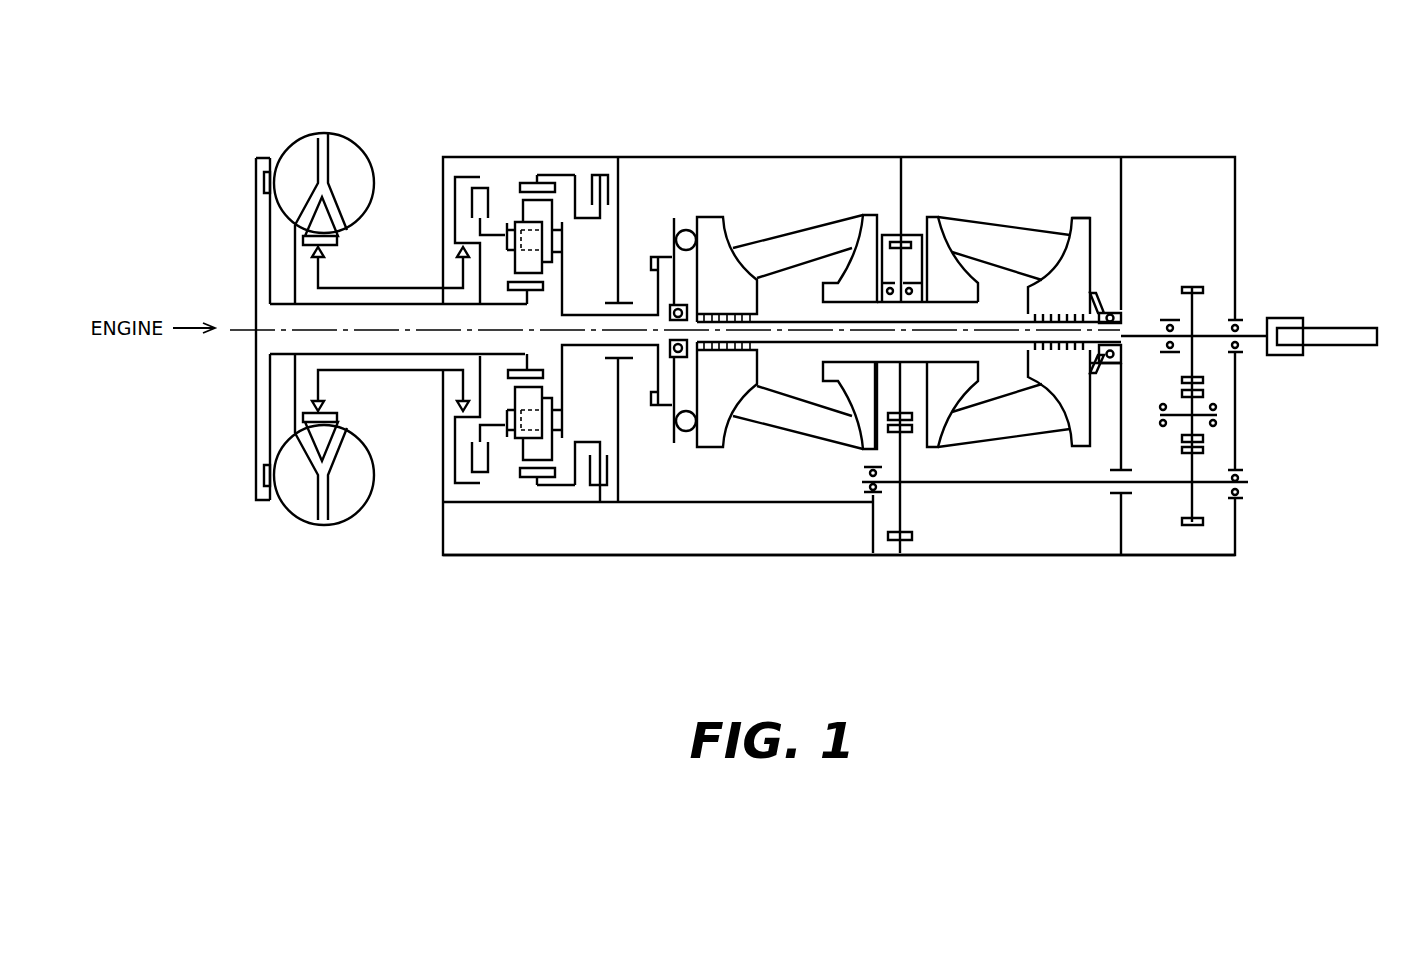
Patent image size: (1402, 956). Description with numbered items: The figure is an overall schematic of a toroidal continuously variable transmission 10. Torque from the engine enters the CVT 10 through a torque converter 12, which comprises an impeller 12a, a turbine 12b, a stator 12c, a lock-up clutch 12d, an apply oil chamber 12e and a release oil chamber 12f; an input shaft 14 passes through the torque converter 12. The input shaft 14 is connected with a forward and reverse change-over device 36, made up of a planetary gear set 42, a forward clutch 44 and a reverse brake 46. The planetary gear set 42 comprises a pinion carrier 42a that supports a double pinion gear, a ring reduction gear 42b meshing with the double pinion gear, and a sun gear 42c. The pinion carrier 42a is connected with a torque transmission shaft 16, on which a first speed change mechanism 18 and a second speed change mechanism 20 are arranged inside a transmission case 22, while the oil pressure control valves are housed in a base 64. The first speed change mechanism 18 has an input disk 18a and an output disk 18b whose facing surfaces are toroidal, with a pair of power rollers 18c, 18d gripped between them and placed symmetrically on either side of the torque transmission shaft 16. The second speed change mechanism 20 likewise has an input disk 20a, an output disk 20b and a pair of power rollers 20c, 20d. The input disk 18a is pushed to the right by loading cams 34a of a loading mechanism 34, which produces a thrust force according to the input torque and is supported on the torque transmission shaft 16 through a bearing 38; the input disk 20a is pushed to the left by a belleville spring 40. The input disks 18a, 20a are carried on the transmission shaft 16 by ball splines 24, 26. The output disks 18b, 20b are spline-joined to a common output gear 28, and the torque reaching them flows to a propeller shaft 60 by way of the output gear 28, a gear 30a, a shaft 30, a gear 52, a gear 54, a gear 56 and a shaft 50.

The toroidal continuously variable transmission 10 is at (856, 99).
The torque converter 12 is at (299, 105).
The impeller 12a is at (357, 158).
The turbine 12b is at (302, 168).
The stator 12c is at (347, 230).
The lock-up clutch 12d is at (270, 218).
The apply oil chamber 12e is at (280, 418).
The release oil chamber 12f is at (258, 254).
The input shaft 14 is at (403, 356).
The torque transmission shaft 16 is at (772, 425).
The first speed change mechanism 18 is at (734, 203).
The input disk 18a is at (722, 216).
The output disk 18b is at (858, 214).
The power roller 18c is at (800, 232).
The power roller 18d is at (848, 448).
The second speed change mechanism 20 is at (992, 175).
The input disk 20a is at (1077, 215).
The output disk 20b is at (937, 215).
The power roller 20c is at (1023, 238).
The power roller 20d is at (963, 446).
The transmission case 22 is at (622, 505).
The ball spline 24 is at (727, 448).
The ball spline 26 is at (1024, 352).
The output gear 28 is at (899, 168).
The shaft 30 is at (1077, 487).
The gear 30a is at (893, 543).
The loading mechanism 34 is at (671, 185).
The loading cams 34a is at (677, 233).
The forward and reverse change-over device 36 is at (491, 169).
The bearing 38 is at (672, 445).
The belleville spring 40 is at (1098, 300).
The planetary gear set 42 is at (508, 471).
The pinion carrier 42a is at (560, 385).
The ring reduction gear 42b is at (525, 182).
The sun gear 42c is at (537, 297).
The forward clutch 44 is at (487, 190).
The reverse brake 46 is at (593, 175).
The shaft 50 is at (1250, 336).
The gear 52 is at (1203, 522).
The gear 54 is at (1203, 440).
The gear 56 is at (1202, 286).
The propeller shaft 60 is at (1340, 330).
The base 64 is at (845, 533).